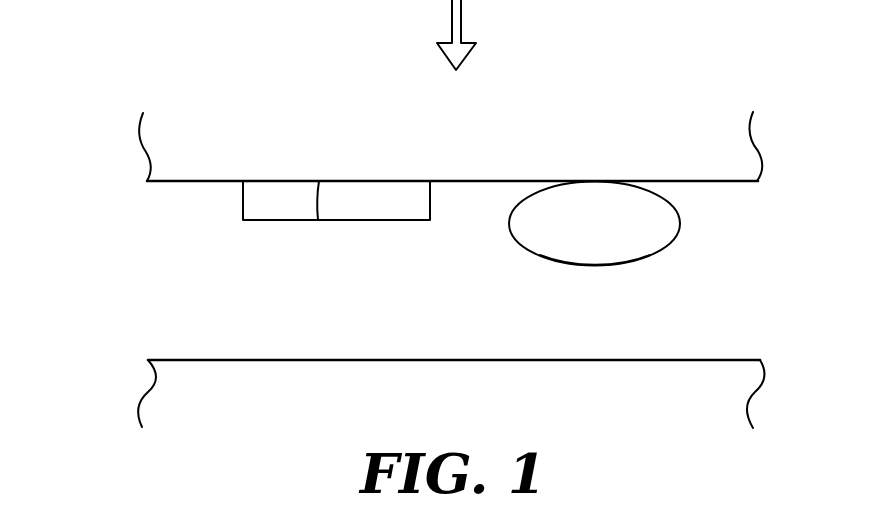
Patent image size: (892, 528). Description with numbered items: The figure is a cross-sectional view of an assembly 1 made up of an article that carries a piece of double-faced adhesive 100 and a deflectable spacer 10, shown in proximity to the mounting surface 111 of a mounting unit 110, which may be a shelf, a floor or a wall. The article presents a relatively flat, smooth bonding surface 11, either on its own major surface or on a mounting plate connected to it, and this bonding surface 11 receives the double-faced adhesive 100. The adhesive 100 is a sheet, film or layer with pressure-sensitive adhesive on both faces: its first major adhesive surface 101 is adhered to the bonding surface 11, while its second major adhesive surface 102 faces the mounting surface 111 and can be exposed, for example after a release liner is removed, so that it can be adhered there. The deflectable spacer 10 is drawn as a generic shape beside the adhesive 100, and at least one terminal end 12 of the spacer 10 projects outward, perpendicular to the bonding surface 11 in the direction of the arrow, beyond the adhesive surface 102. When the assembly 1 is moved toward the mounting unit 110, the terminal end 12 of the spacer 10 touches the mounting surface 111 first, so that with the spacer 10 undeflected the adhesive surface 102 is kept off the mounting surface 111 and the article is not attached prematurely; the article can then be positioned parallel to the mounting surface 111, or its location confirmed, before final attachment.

The assembly 1 is at (172, 75).
The bonding surface 11 is at (180, 184).
The double-faced adhesive 100 is at (259, 207).
The first major adhesive surface 101 is at (318, 220).
The second major adhesive surface 102 is at (384, 220).
The deflectable spacer 10 is at (643, 243).
The terminal end 12 is at (595, 268).
The mounting unit 110 is at (157, 397).
The mounting surface 111 is at (193, 360).